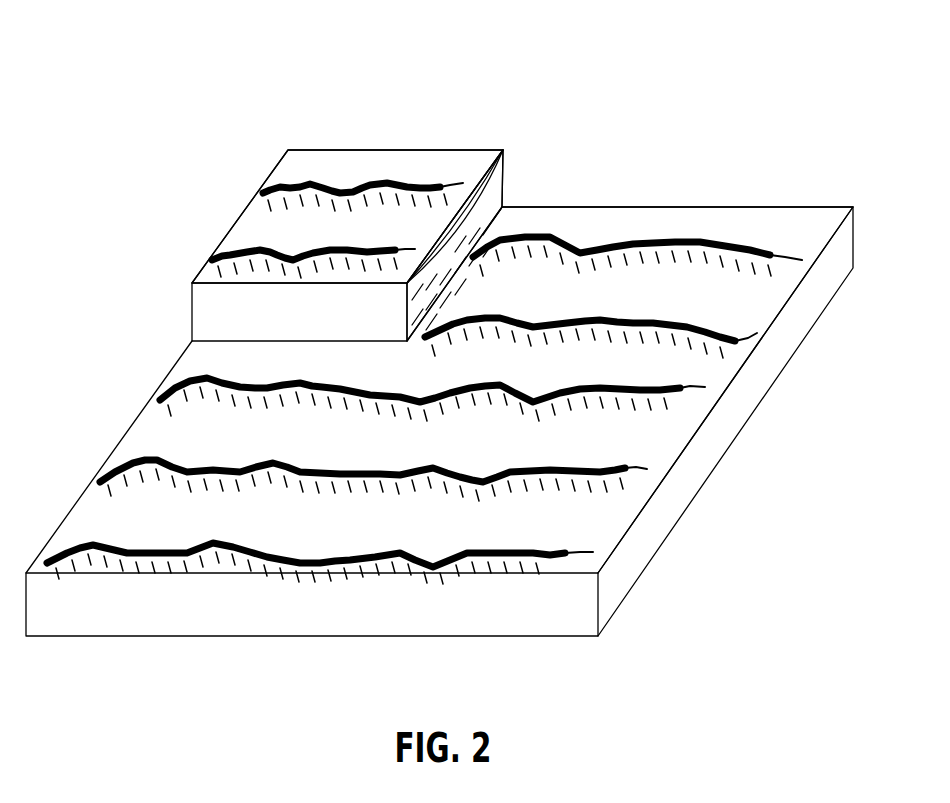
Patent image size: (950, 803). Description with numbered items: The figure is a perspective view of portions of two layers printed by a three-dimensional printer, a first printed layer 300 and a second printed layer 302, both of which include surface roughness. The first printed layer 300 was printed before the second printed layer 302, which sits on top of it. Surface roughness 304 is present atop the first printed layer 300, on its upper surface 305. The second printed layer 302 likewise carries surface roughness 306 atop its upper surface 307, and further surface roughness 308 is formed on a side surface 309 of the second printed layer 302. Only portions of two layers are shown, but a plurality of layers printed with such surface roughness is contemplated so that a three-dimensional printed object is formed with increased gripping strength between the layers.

The first printed layer 300 is at (128, 420).
The second printed layer 302 is at (385, 177).
The surface roughness 304 is at (698, 320).
The upper surface 305 is at (745, 220).
The surface roughness 306 is at (293, 257).
The upper surface 307 is at (432, 167).
The surface roughness 308 is at (498, 172).
The side surface 309 is at (497, 205).